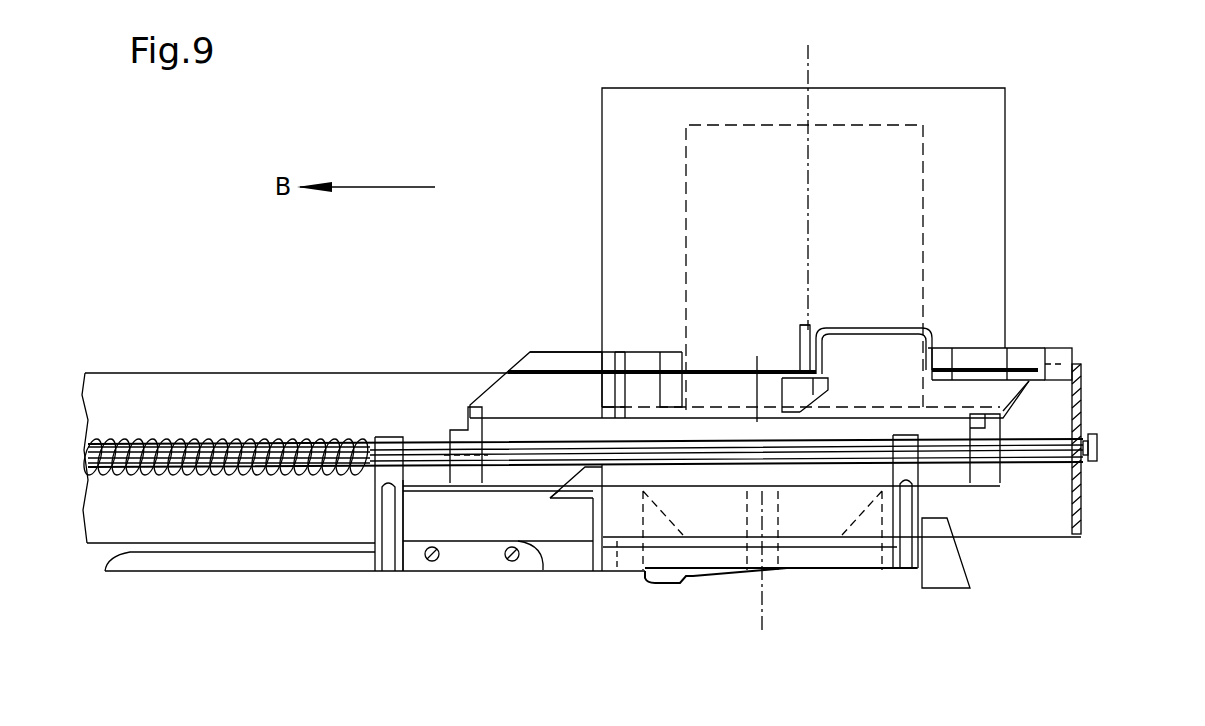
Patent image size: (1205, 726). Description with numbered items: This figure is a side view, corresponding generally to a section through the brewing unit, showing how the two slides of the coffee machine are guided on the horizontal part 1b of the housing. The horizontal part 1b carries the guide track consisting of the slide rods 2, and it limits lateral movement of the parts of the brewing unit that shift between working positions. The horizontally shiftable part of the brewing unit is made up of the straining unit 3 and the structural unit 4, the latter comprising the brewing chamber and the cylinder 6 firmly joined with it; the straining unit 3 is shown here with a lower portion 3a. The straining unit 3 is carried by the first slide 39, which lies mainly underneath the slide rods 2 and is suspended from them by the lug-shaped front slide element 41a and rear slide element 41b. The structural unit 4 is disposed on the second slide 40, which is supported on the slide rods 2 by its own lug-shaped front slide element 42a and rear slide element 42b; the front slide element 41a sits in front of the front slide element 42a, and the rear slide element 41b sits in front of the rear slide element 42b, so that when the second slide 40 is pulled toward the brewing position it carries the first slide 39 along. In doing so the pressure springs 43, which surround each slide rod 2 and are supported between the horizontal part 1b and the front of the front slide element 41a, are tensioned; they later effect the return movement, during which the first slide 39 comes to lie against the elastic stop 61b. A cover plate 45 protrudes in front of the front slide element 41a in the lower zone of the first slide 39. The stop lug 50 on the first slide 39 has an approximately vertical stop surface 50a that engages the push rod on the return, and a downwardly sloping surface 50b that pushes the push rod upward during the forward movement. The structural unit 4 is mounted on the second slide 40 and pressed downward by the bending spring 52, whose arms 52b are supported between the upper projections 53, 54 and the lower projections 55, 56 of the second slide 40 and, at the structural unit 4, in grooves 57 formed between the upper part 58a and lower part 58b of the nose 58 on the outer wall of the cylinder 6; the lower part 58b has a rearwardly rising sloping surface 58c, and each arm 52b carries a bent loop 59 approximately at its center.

The horizontal part 1b is at (157, 400).
The slide rods 2 is at (202, 458).
The pressure springs 43 is at (243, 457).
The front slide element 41a is at (392, 453).
The front slide element 42a is at (467, 458).
The upper projection 54 is at (543, 360).
The bending spring 52 is at (560, 350).
The structural unit 4 is at (586, 322).
The lower projection 56 is at (601, 357).
The arms 52b is at (638, 358).
The bent loop 59 is at (757, 360).
The grooves 57 is at (795, 355).
The upper part of nose 58a is at (800, 328).
The nose 58 is at (837, 336).
The lower part of nose 58b is at (845, 360).
The sloping surface 58c is at (810, 400).
The lower projection 55 is at (1022, 371).
The upper projection 53 is at (1040, 354).
The cylinder 6 is at (617, 137).
The second slide 40 is at (1050, 397).
The cover plate 45 is at (273, 558).
The stop lug 50 is at (583, 487).
The sloping surface 50b is at (557, 477).
The stop surface 50a is at (630, 488).
The lever foot 3a is at (664, 577).
The straining unit 3 is at (777, 585).
The rear slide element 41b is at (905, 447).
The first slide 39 is at (906, 587).
The stop 61b is at (935, 568).
The rear slide element 42b is at (990, 465).